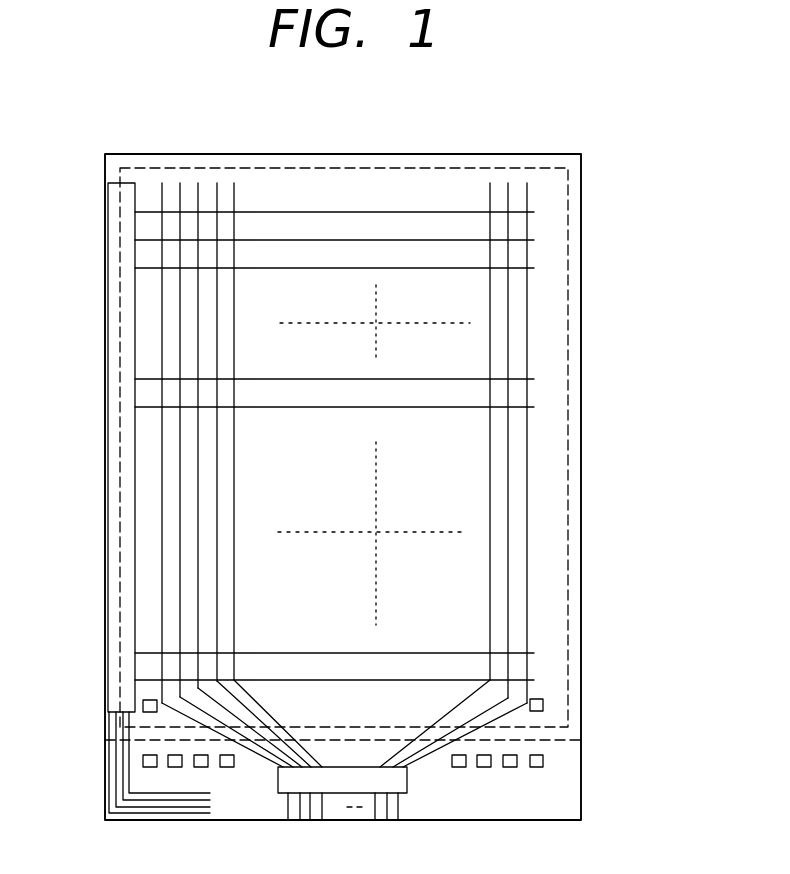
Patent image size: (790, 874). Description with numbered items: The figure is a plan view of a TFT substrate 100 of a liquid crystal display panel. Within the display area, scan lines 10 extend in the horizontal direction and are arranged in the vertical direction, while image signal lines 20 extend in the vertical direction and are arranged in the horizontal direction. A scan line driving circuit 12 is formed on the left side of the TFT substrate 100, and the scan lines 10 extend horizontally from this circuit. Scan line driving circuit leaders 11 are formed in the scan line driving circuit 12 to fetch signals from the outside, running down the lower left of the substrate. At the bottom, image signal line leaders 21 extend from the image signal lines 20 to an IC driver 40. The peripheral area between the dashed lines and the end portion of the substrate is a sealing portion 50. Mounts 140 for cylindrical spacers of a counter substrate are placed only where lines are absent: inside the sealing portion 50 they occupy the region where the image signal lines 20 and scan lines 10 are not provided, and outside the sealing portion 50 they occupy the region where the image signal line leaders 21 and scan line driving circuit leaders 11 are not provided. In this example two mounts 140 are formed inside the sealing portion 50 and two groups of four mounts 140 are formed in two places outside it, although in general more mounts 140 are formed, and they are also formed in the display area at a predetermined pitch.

The TFT substrate 100 is at (582, 670).
The sealing portion 50 is at (338, 168).
The scan line driving circuit 12 is at (108, 317).
The scan line driving circuit leader 11 is at (109, 770).
The scan line 10 is at (318, 268).
The image signal line 20 is at (235, 349).
The image signal line leader 21 is at (424, 757).
The IC driver 40 is at (285, 778).
The mount 140 is at (543, 705).